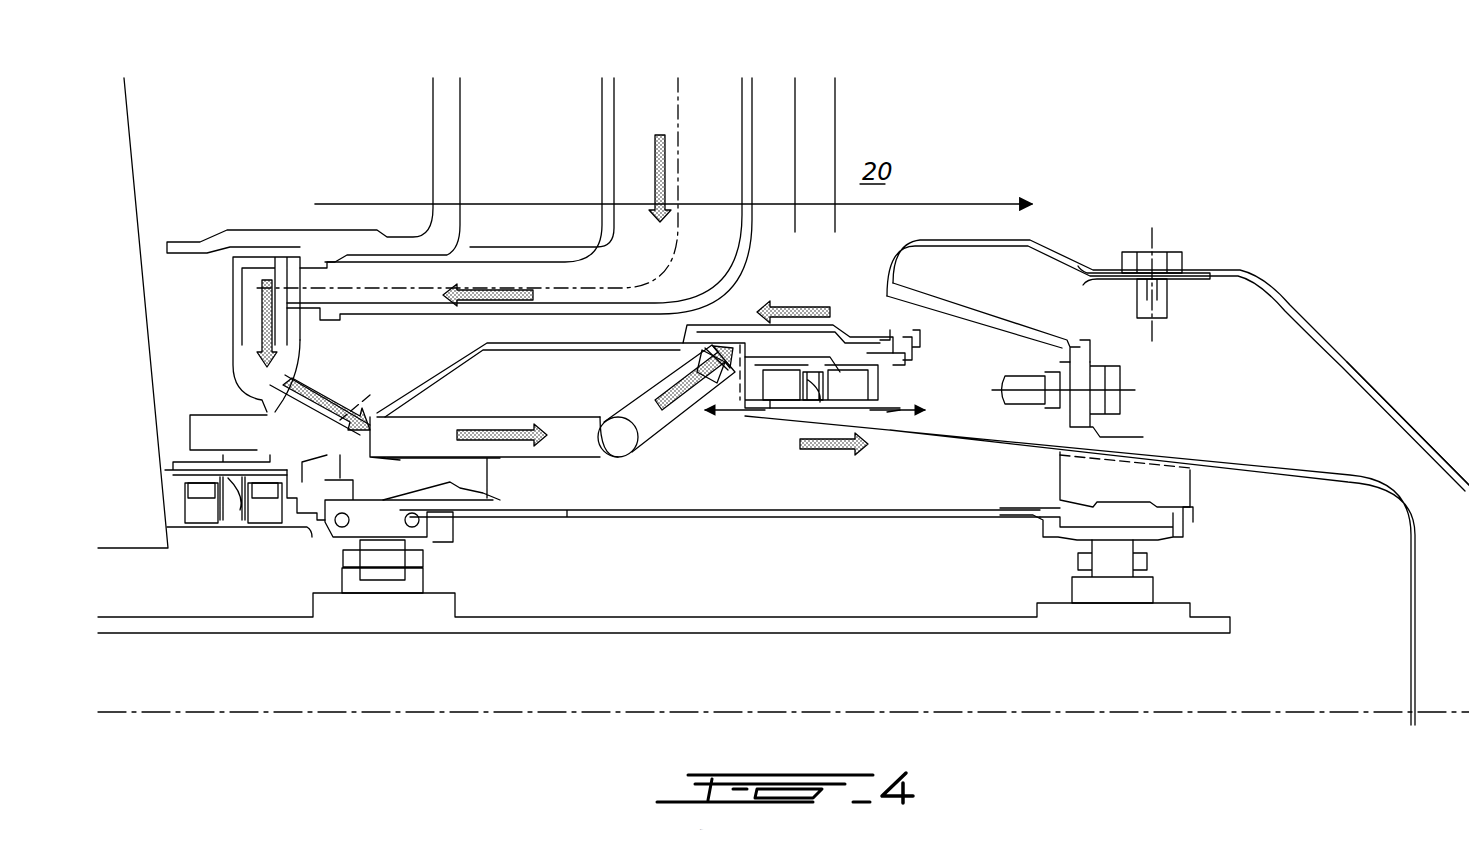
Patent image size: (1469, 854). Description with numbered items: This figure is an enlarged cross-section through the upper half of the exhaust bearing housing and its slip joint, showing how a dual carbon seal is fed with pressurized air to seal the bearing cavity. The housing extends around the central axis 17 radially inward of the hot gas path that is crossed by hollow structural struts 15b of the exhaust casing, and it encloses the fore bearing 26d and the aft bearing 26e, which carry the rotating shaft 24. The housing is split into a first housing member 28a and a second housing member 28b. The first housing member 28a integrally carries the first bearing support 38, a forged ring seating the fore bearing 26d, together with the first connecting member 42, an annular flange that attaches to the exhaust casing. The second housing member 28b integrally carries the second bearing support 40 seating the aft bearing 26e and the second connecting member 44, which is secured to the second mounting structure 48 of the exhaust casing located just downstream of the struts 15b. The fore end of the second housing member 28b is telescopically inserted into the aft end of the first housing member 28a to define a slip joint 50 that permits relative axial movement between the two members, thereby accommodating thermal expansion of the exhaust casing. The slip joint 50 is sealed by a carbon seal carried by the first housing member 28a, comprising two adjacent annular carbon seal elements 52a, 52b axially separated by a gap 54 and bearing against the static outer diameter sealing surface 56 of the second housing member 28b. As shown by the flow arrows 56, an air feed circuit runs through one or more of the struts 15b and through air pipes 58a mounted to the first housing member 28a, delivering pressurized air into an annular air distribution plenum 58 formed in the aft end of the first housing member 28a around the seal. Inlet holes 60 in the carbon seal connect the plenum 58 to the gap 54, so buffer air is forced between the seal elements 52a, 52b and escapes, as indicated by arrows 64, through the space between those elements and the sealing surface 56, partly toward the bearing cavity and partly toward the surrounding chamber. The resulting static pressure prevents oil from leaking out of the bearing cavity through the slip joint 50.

The hollow structural struts 15b is at (815, 93).
The central axis 17 is at (1457, 712).
The rotating shaft 24 is at (733, 637).
The fore bearing 26d is at (305, 575).
The aft bearing 26e is at (1195, 574).
The first housing member 28a is at (563, 330).
The second housing member 28b is at (985, 462).
The first bearing support 38 is at (408, 470).
The second bearing support 40 is at (1165, 487).
The first connecting member 42 is at (296, 318).
The second connecting member 44 is at (1047, 420).
The second mounting structure 48 is at (1100, 342).
The slip joint 50 is at (855, 314).
The first carbon seal element 52a is at (782, 402).
The second carbon seal element 52b is at (860, 402).
The gap 54 is at (813, 402).
The flow arrows 56 is at (672, 162).
The air distribution plenum 58 is at (740, 337).
The air pipes 58a is at (563, 452).
The inlet holes 60 is at (823, 357).
The arrows 64 is at (712, 432).